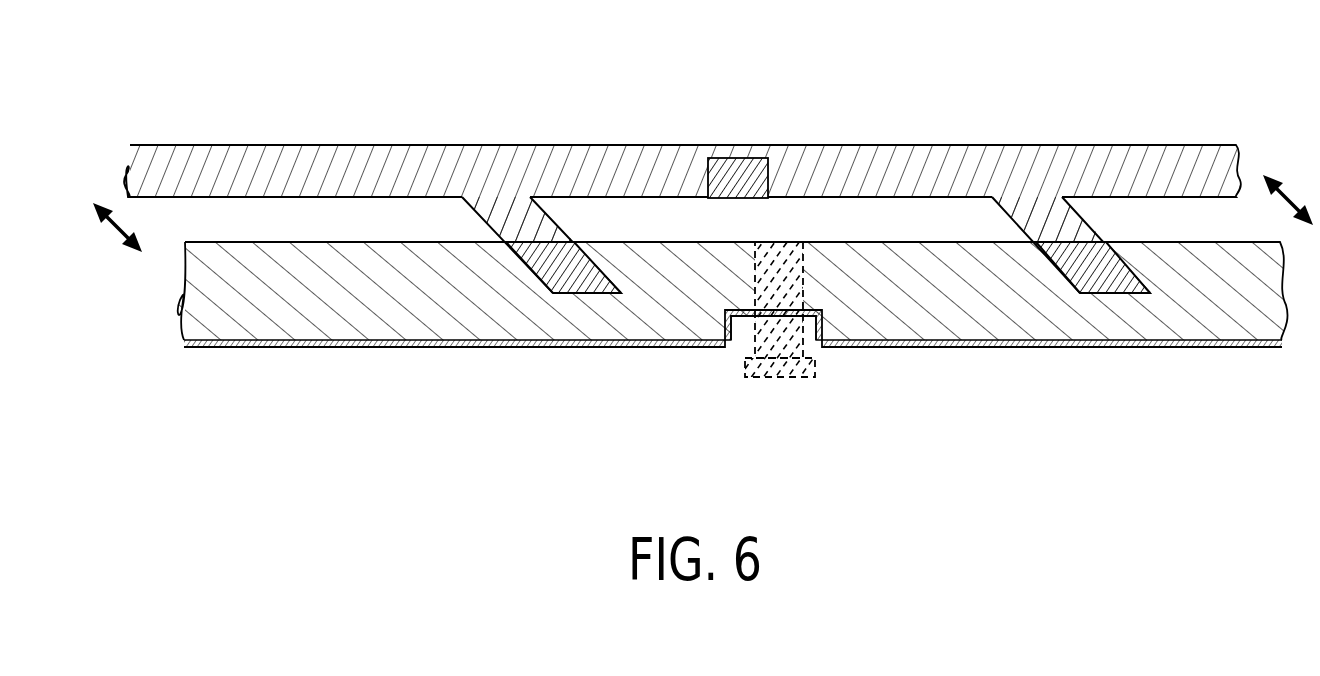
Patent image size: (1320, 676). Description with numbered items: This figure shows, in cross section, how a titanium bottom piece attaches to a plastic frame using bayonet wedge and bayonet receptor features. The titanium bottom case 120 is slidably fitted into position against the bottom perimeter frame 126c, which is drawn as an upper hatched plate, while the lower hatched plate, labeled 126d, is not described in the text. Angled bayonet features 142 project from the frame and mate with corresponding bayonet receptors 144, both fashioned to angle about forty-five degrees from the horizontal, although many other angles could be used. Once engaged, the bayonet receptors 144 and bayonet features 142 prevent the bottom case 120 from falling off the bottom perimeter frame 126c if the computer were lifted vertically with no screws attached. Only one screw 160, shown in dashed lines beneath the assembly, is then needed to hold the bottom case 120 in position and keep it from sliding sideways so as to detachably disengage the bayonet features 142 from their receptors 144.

The bottom perimeter frame 126c is at (182, 168).
The lower plate 126d is at (213, 293).
The bayonet feature 142 is at (530, 222).
The bayonet receptor 144 is at (558, 270).
The titanium bottom case 120 is at (243, 350).
The screw 160 is at (788, 365).